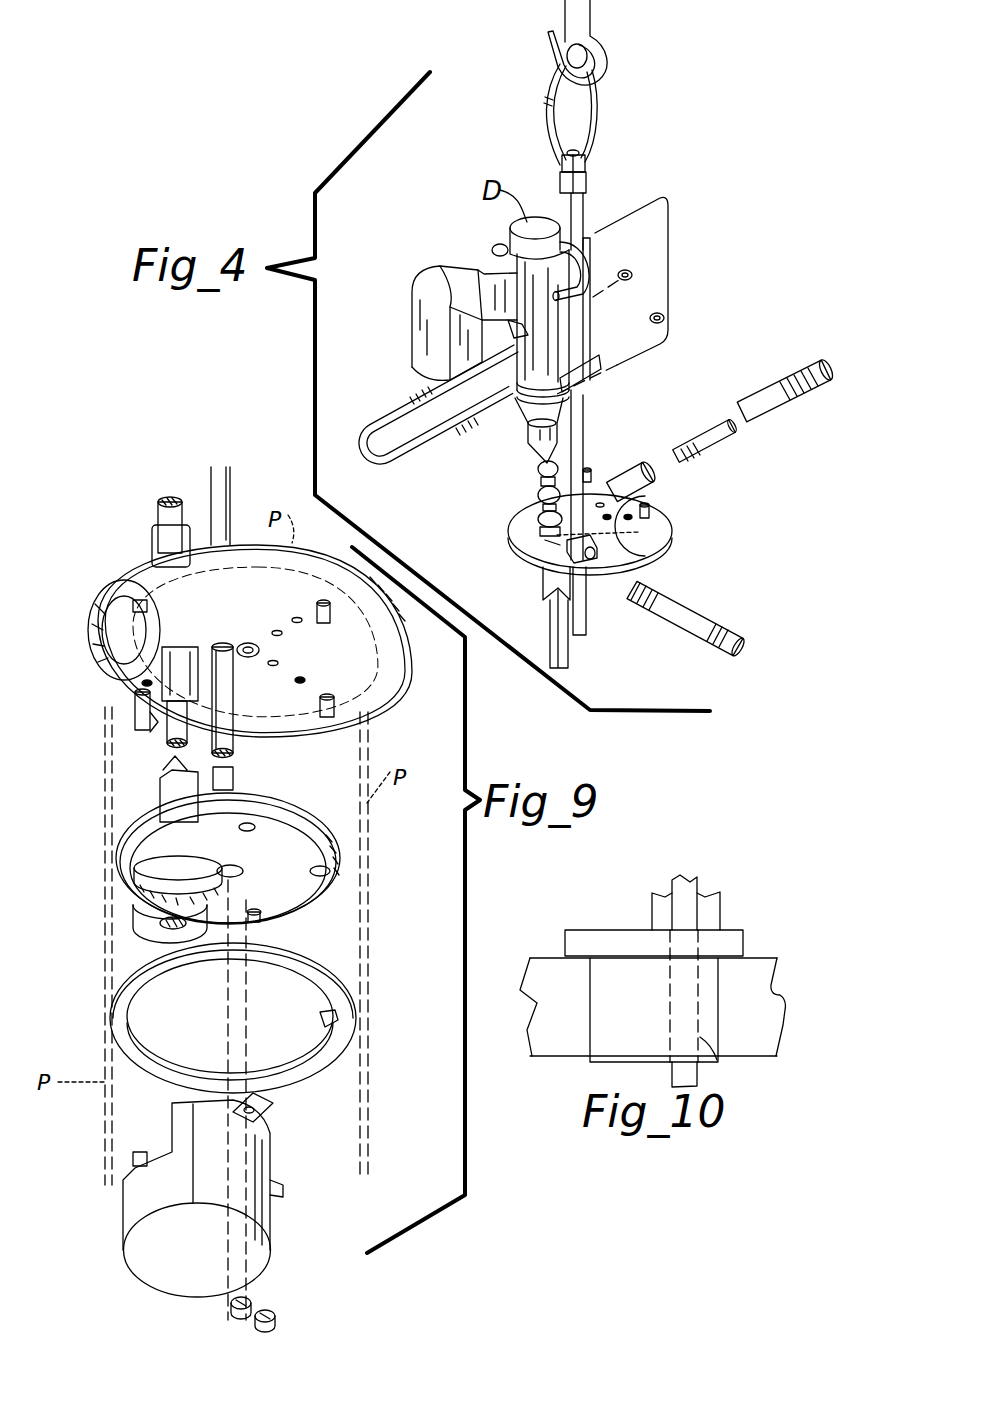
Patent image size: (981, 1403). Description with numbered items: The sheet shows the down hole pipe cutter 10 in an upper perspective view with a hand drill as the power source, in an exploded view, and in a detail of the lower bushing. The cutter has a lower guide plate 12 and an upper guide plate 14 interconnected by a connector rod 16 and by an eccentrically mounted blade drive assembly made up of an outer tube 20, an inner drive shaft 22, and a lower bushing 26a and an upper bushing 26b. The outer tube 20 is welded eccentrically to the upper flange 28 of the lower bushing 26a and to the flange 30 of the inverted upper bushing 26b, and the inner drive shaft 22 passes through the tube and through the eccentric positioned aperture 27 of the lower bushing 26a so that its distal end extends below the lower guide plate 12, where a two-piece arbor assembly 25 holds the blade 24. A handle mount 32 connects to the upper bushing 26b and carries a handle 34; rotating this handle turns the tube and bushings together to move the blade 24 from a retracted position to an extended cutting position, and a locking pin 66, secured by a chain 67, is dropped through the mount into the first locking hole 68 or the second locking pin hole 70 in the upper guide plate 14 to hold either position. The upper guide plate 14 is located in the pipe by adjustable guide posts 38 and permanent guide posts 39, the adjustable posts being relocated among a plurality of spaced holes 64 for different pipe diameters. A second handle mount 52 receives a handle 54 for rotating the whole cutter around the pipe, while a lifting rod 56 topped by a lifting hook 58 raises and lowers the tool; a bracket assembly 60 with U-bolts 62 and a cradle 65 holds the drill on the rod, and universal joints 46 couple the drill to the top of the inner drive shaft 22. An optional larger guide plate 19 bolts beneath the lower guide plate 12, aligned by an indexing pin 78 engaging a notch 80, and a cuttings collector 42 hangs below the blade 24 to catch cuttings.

In FIG. 4, the down hole pipe cutter 10 is at (690, 153).
In FIG. 9, the down hole pipe cutter 10 is at (130, 488).
In FIG. 9, the lower guide plate 12 is at (283, 807).
In FIG. 10, the lower guide plate 12 is at (560, 1043).
In FIG. 4, the upper guide plate 14 is at (517, 523).
In FIG. 9, the upper guide plate 14 is at (97, 653).
In FIG. 4, the connector rod 16 is at (580, 600).
In FIG. 9, the connector rod 16 is at (233, 773).
In FIG. 9, the guide plate 19 is at (337, 993).
In FIG. 4, the outer tube 20 is at (547, 577).
In FIG. 9, the outer tube 20 is at (202, 653).
In FIG. 10, the outer tube 20 is at (720, 912).
In FIG. 4, the inner drive shaft 22 is at (570, 650).
In FIG. 9, the inner drive shaft 22 is at (165, 740).
In FIG. 10, the inner drive shaft 22 is at (683, 873).
In FIG. 9, the blade 24 is at (140, 890).
In FIG. 9, the arbor assembly 25 is at (153, 868).
In FIG. 10, the lower bushing 26a is at (563, 943).
In FIG. 9, the upper bushing 26b is at (182, 660).
In FIG. 10, the eccentric positioned aperture 27 is at (717, 1063).
In FIG. 10, the upper flange 28 is at (612, 930).
In FIG. 9, the flange 30 is at (140, 683).
In FIG. 4, the handle mount 32 is at (567, 553).
In FIG. 9, the handle mount 32 is at (153, 543).
In FIG. 4, the handle 34 is at (707, 607).
In FIG. 9, the handle 34 is at (157, 515).
In FIG. 4, the adjustable guide posts 38 is at (587, 477).
In FIG. 9, the adjustable guide posts 38 is at (412, 672).
In FIG. 9, the permanent guide posts 39 is at (147, 665).
In FIG. 9, the cuttings collector 42 is at (143, 1208).
In FIG. 4, the universal joints 46 is at (514, 490).
In FIG. 4, the second handle mount 52 is at (647, 473).
In FIG. 4, the handle 54 is at (763, 388).
In FIG. 4, the lifting rod 56 is at (578, 213).
In FIG. 9, the lifting rod 56 is at (223, 500).
In FIG. 4, the lifting hook 58 is at (594, 140).
In FIG. 4, the bracket assembly 60 is at (676, 248).
In FIG. 4, the U-bolts 62 is at (395, 415).
In FIG. 4, the spaced holes 64 is at (598, 500).
In FIG. 9, the spaced holes 64 is at (300, 622).
In FIG. 4, the cradle 65 is at (548, 250).
In FIG. 4, the locking pin 66 is at (547, 540).
In FIG. 9, the locking pin 66 is at (130, 618).
In FIG. 4, the chain 67 is at (630, 532).
In FIG. 9, the first locking hole 68 is at (137, 610).
In FIG. 4, the second locking pin hole 70 is at (533, 520).
In FIG. 9, the second locking pin hole 70 is at (150, 710).
In FIG. 9, the indexing pin 78 is at (333, 870).
In FIG. 9, the notch 80 is at (333, 1017).